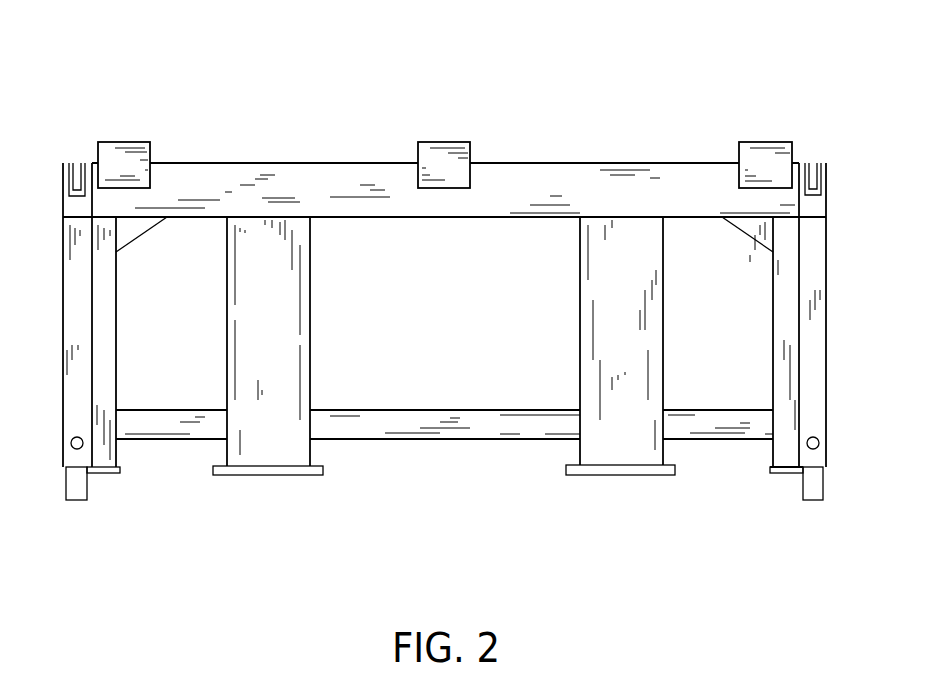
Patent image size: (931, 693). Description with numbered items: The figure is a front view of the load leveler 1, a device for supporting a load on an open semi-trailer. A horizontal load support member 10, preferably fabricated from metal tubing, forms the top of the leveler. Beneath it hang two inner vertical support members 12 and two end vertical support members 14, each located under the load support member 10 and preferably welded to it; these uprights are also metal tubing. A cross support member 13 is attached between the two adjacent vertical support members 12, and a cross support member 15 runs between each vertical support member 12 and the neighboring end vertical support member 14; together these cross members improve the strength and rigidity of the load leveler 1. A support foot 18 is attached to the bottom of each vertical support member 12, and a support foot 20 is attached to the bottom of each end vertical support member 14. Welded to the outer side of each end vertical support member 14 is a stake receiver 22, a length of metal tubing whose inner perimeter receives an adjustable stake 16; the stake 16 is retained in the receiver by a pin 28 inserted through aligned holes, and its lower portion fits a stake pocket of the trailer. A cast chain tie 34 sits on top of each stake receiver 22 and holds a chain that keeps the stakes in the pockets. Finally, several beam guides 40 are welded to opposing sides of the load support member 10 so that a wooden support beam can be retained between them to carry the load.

The load leveler 1 is at (578, 108).
The load support member 10 is at (283, 172).
The vertical support member 12 is at (283, 275).
The cross support member 13 is at (400, 410).
The end vertical support member 14 is at (110, 350).
The cross support member 15 is at (165, 440).
The adjustable stake 16 is at (80, 484).
The support foot 18 is at (280, 475).
The support foot 20 is at (770, 469).
The stake receiver 22 is at (75, 285).
The pin 28 is at (73, 448).
The chain tie 34 is at (63, 178).
The beam guide 40 is at (130, 142).